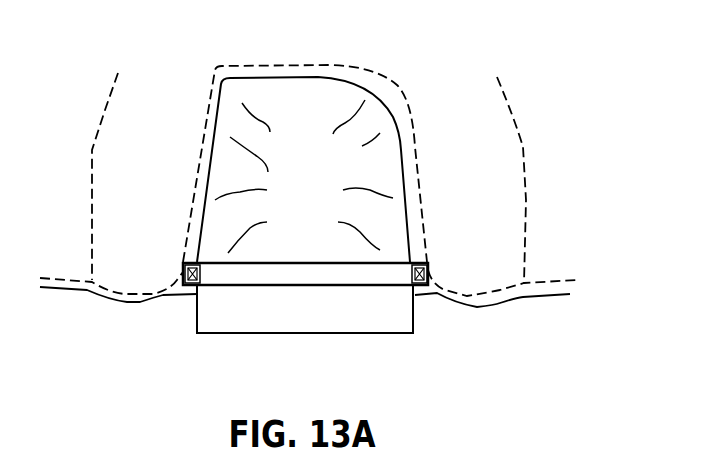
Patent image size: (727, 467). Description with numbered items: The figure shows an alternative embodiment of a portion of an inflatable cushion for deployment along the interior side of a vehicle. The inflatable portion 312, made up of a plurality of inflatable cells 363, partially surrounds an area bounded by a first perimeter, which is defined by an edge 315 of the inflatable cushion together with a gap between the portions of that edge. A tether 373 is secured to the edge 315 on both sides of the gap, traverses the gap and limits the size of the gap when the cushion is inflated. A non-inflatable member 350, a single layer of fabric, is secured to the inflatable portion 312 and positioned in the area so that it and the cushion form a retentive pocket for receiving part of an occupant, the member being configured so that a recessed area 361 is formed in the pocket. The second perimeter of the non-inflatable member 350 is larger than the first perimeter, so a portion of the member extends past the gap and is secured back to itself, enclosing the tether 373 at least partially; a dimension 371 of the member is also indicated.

The non-inflatable member 350 is at (323, 93).
The recessed area 361 is at (312, 187).
The edge of the inflatable cushion 315 is at (196, 188).
The inflatable cells 363 is at (113, 226).
The inflatable portion 312 is at (503, 176).
The tether 373 is at (235, 275).
The width 371 is at (196, 355).